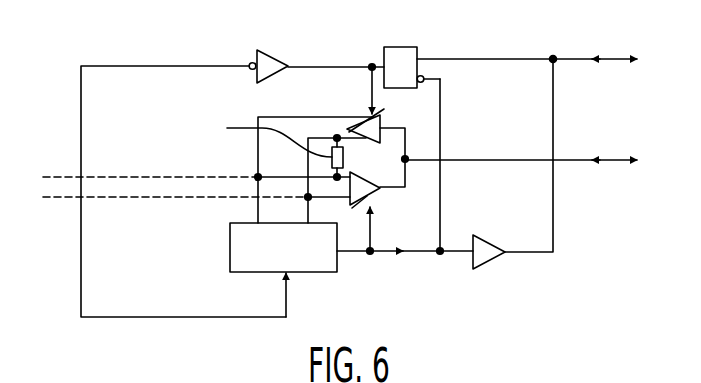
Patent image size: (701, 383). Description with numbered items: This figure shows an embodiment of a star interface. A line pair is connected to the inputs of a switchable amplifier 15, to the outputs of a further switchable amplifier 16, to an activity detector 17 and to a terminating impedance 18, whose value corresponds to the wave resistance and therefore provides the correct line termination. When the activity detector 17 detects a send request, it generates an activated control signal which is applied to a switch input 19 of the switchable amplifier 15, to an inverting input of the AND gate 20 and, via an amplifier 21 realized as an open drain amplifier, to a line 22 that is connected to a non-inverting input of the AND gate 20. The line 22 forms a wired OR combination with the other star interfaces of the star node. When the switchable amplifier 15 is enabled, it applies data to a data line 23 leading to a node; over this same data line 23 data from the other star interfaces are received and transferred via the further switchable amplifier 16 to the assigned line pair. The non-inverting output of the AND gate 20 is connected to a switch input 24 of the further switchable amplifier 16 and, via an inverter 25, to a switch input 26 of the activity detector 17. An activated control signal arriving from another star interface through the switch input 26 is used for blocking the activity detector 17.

The switchable amplifier 15 is at (362, 207).
The further switchable amplifier 16 is at (384, 114).
The activity detector 17 is at (230, 250).
The terminating impedance 18 is at (345, 158).
The switch input 19 is at (378, 196).
The AND gate 20 is at (397, 47).
The amplifier 21 is at (490, 238).
The line 22 is at (481, 59).
The data line 23 is at (485, 160).
The switch input 24 is at (367, 110).
The inverter 25 is at (268, 54).
The switch input 26 is at (293, 274).